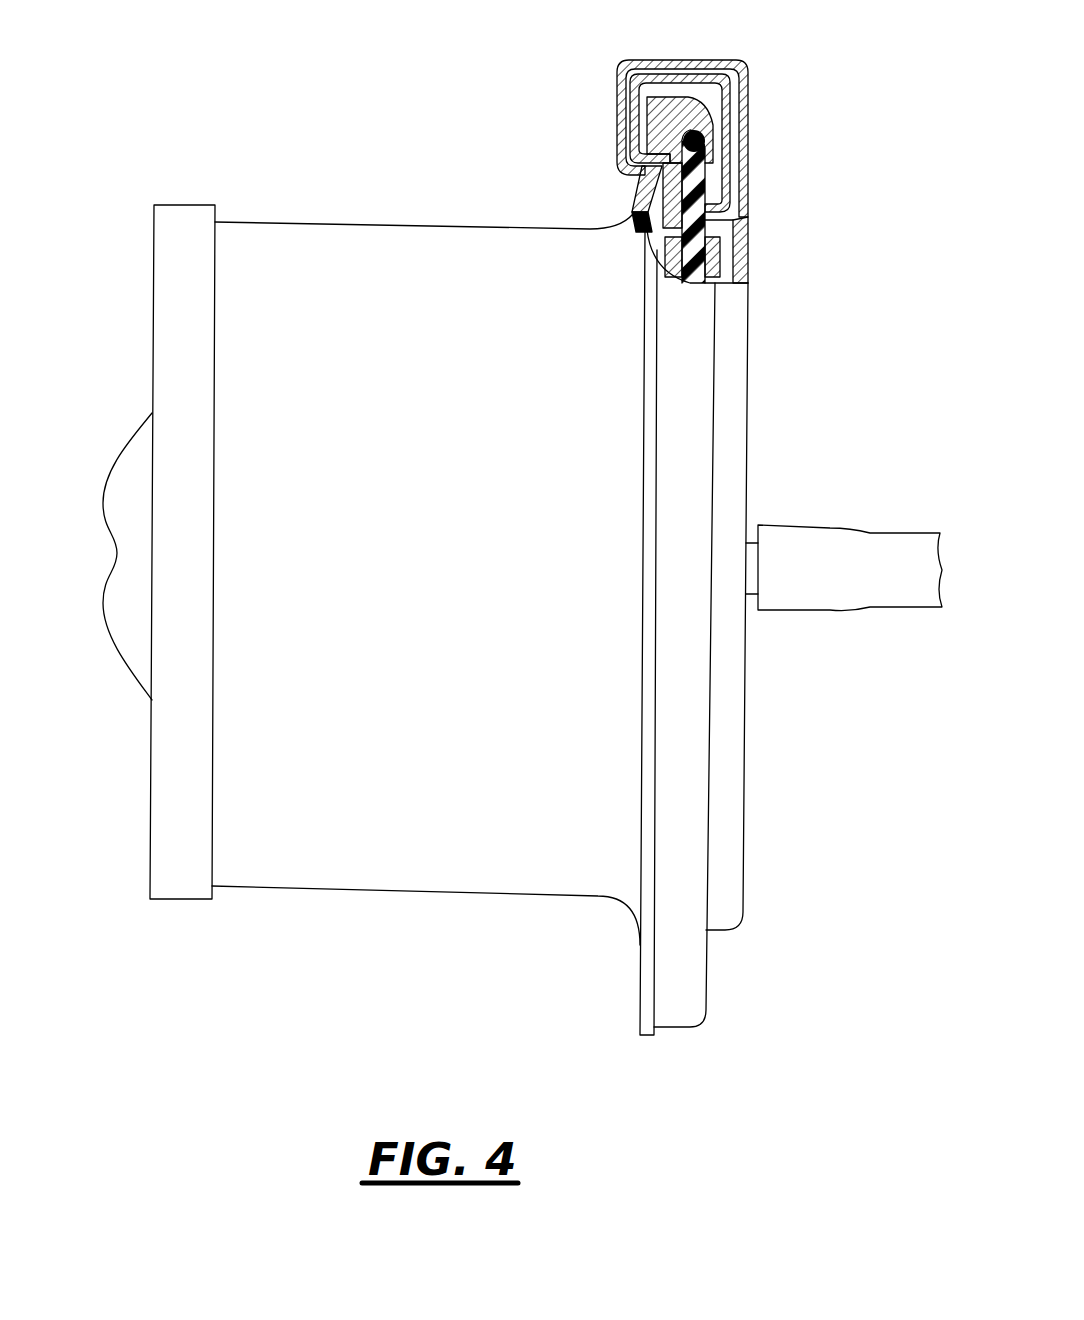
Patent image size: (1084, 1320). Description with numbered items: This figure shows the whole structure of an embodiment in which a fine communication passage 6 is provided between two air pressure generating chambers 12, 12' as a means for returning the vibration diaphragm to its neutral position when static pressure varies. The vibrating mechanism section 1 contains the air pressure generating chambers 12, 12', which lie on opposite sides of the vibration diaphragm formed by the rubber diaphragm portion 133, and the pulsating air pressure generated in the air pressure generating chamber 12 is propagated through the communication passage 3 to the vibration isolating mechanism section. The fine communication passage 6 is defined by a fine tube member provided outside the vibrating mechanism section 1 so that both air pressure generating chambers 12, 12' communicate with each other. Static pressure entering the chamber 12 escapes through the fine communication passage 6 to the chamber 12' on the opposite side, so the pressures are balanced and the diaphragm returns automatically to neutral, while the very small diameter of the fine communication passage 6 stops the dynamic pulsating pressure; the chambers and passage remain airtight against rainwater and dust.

The vibrating mechanism section 1 is at (485, 92).
The communication passage 3 is at (890, 555).
The fine communication passage 6 is at (632, 120).
The air pressure generating chamber 12 is at (725, 250).
The air pressure generating chamber 12' is at (629, 197).
The rubber diaphragm portion 133 is at (697, 228).